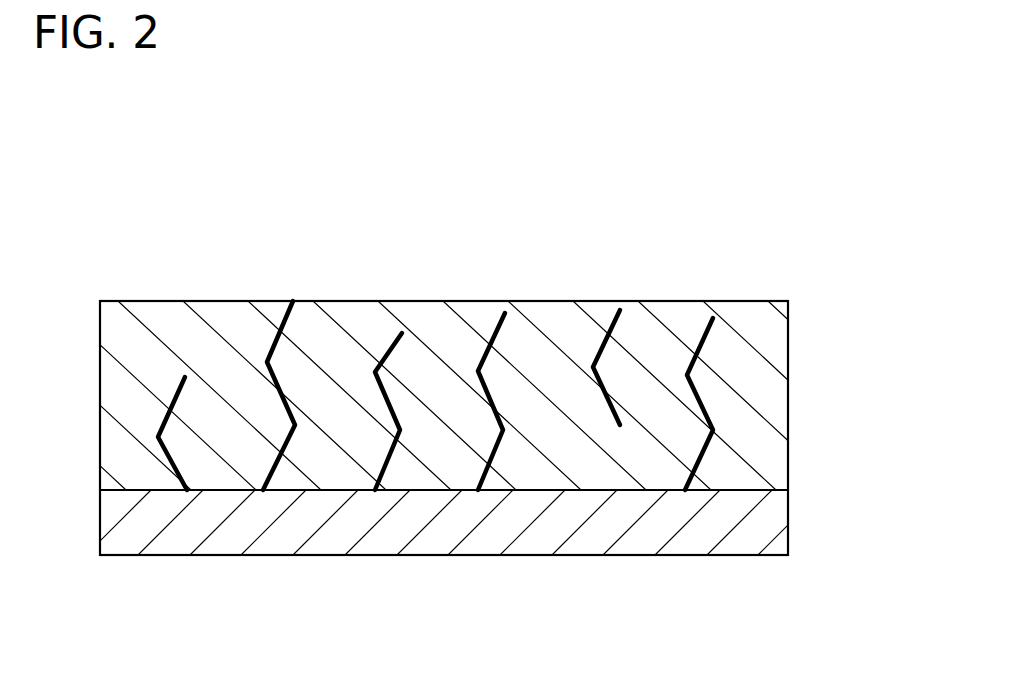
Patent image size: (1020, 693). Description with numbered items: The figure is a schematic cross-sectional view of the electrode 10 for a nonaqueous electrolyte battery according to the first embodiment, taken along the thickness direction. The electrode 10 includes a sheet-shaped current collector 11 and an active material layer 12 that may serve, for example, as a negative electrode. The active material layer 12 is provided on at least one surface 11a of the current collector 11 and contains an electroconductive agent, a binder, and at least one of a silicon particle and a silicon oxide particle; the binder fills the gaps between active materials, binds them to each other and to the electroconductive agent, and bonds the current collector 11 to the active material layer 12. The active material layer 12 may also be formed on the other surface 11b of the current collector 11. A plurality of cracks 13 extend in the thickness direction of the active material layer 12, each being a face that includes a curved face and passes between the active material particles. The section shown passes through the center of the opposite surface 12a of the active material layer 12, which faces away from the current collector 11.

The electrode for a nonaqueous electrolyte battery 10 is at (743, 189).
The current collector 11 is at (752, 525).
The surface of the current collector 11a is at (744, 490).
The other surface of the current collector 11b is at (742, 556).
The active material layer 12 is at (757, 385).
The opposite surface of the active material layer 12a is at (760, 301).
The cracks 13 is at (704, 335).